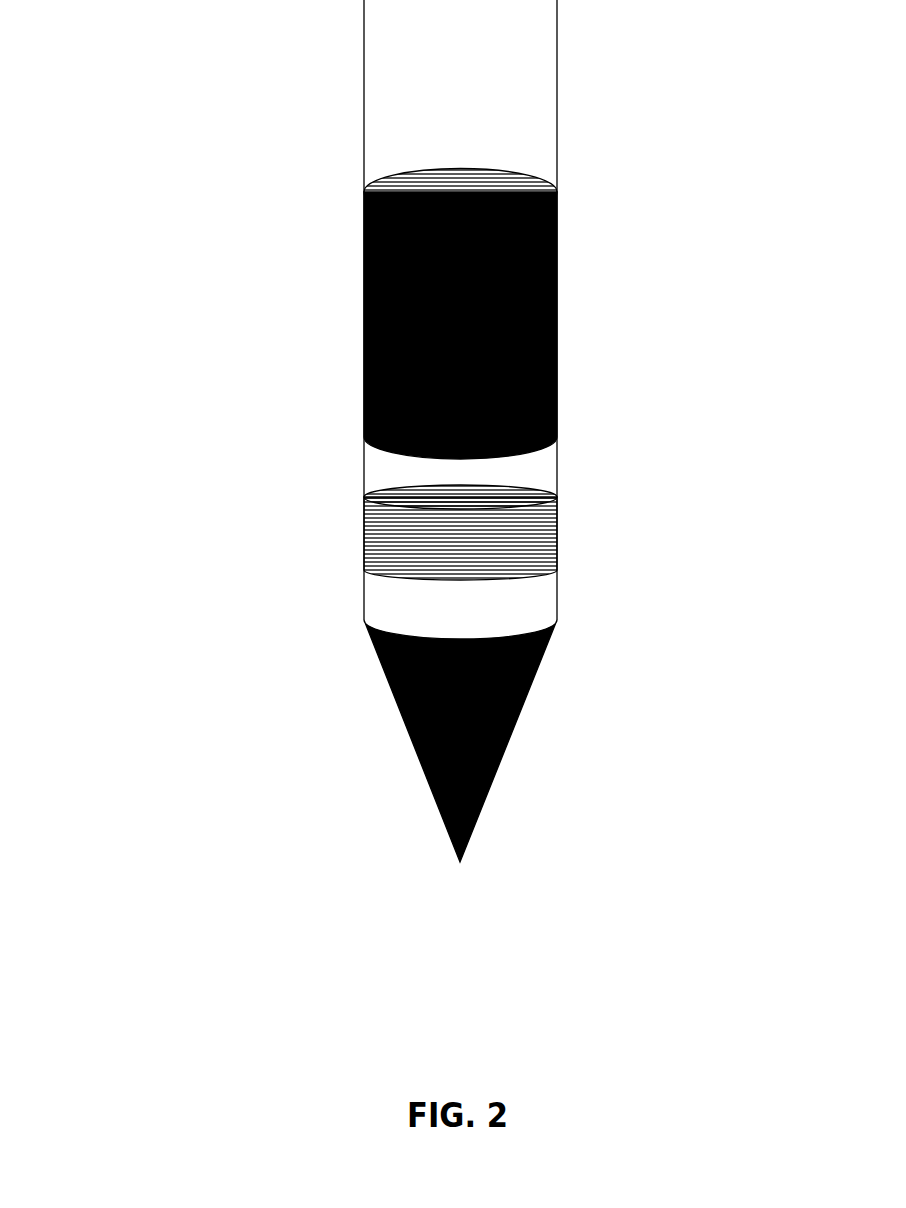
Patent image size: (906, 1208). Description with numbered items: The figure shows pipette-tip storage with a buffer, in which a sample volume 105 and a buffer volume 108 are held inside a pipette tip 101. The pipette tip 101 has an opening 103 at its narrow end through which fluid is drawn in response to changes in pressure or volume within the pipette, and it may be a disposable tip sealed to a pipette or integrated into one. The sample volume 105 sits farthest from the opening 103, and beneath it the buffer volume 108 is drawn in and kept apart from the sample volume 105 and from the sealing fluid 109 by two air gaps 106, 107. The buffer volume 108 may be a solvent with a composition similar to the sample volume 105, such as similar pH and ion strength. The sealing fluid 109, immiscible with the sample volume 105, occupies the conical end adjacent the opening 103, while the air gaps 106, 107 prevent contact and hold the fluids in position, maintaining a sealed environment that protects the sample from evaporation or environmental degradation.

The pipette tip 101 is at (364, 24).
The sample volume 105 is at (365, 296).
The air gap 106 is at (493, 477).
The air gap 107 is at (493, 610).
The buffer volume 108 is at (385, 545).
The sealing fluid 109 is at (410, 740).
The opening 103 is at (460, 862).